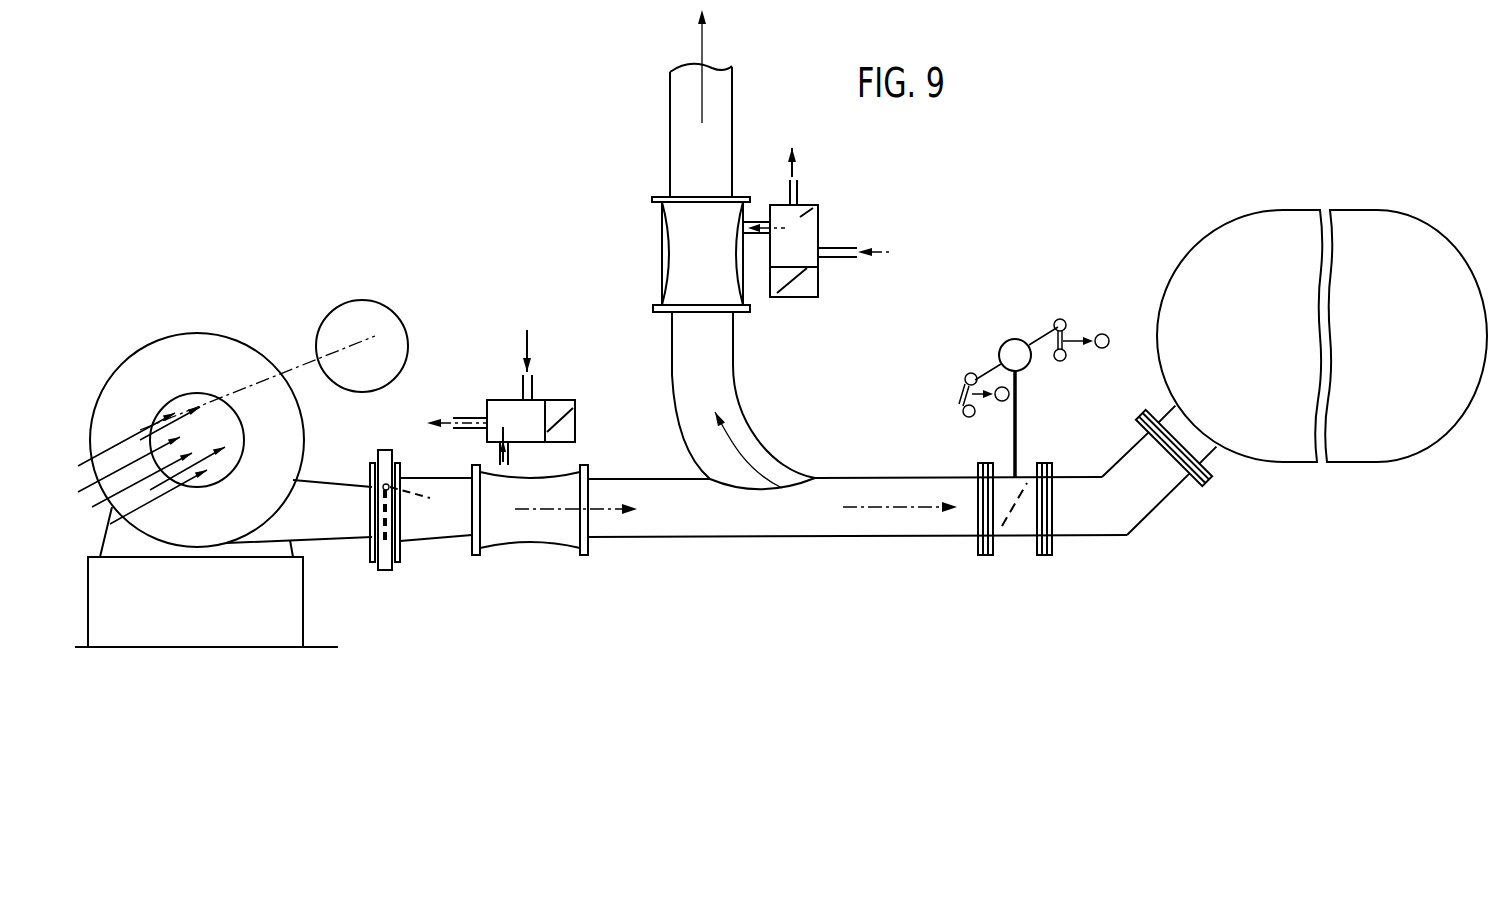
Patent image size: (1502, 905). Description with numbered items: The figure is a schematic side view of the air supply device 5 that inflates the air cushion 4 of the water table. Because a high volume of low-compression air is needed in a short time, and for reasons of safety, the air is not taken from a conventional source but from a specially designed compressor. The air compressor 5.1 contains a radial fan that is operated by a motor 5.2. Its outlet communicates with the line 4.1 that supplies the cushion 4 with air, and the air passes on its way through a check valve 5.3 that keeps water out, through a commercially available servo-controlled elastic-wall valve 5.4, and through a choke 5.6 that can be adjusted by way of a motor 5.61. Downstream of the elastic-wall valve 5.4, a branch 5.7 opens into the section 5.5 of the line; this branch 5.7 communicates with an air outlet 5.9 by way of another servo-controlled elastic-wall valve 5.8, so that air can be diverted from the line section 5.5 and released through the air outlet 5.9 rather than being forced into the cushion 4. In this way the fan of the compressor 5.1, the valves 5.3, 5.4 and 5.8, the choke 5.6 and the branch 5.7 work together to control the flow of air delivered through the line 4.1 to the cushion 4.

The air cushion 4 is at (1222, 238).
The line 4.1 is at (1207, 452).
The air supply device 5 is at (967, 238).
The air compressor 5.1 is at (145, 358).
The motor 5.2 is at (354, 310).
The check valve 5.3 is at (388, 565).
The servo-controlled elastic-wall valve 5.4 is at (530, 533).
The section of line 5.5 is at (753, 530).
The choke 5.6 is at (1027, 521).
The motor 5.61 is at (1003, 340).
The branch 5.7 is at (743, 415).
The servo-controlled elastic-wall valve 5.8 is at (678, 250).
The air outlet 5.9 is at (677, 90).